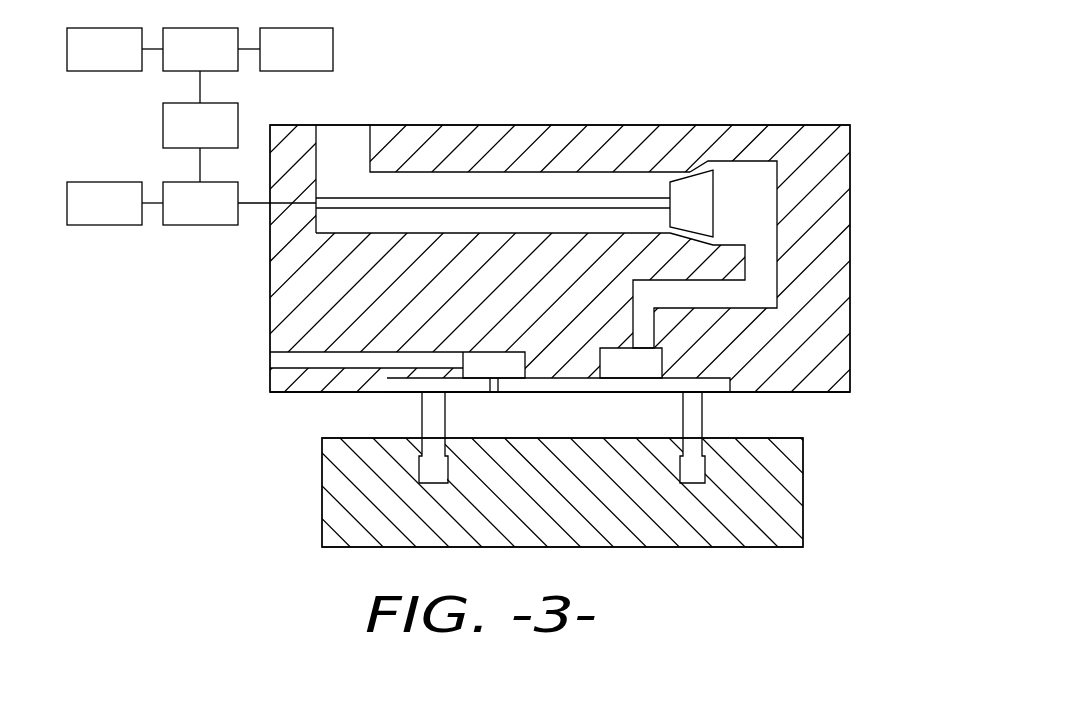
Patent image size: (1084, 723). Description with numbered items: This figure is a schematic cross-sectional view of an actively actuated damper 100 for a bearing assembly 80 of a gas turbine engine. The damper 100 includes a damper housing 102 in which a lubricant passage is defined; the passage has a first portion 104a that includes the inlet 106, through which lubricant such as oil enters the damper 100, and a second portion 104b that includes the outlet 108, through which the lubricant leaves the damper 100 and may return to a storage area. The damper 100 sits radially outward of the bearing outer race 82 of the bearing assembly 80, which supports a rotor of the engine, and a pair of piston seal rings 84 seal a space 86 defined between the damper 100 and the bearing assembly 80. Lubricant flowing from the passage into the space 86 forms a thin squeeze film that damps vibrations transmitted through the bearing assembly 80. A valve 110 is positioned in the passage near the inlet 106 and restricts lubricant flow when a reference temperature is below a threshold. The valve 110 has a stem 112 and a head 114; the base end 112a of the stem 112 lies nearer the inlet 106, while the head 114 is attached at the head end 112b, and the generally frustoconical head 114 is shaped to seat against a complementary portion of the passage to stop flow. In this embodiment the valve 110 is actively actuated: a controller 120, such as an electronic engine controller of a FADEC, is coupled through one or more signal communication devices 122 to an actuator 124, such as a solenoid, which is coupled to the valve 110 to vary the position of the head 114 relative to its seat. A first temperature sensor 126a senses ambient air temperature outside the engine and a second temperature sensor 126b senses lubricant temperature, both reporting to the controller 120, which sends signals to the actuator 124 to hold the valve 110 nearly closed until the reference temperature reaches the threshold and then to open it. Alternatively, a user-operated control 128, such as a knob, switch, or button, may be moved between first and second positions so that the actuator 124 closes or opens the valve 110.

The damper 100 is at (819, 60).
The damper housing 102 is at (818, 260).
The first portion of the lubricant passage 104a is at (751, 206).
The second portion of the lubricant passage 104b is at (330, 357).
The inlet 106 is at (351, 152).
The outlet 108 is at (269, 358).
The valve 110 is at (567, 197).
The stem 112 is at (473, 197).
The base end of the stem 112a is at (342, 188).
The head end of the stem 112b is at (654, 197).
The head 114 is at (693, 190).
The controller 120 is at (200, 65).
The signal communication device 122 is at (200, 142).
The actuator 124 is at (239, 203).
The first temperature sensor 126a is at (115, 49).
The second temperature sensor 126b is at (285, 49).
The control 128 is at (115, 203).
The bearing assembly 80 is at (314, 497).
The bearing outer race 82 is at (772, 492).
The piston seal rings 84 is at (422, 417).
The space 86 is at (585, 416).